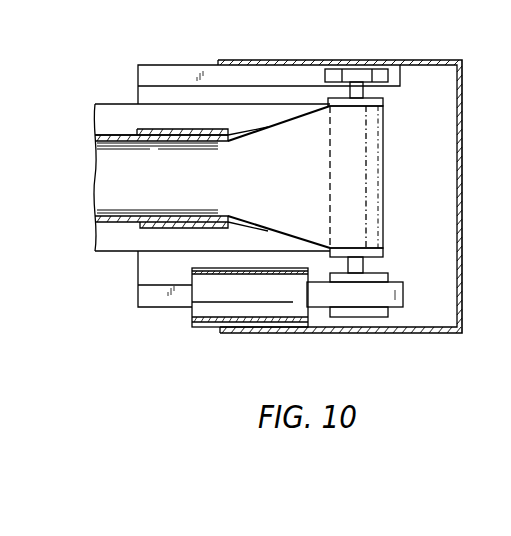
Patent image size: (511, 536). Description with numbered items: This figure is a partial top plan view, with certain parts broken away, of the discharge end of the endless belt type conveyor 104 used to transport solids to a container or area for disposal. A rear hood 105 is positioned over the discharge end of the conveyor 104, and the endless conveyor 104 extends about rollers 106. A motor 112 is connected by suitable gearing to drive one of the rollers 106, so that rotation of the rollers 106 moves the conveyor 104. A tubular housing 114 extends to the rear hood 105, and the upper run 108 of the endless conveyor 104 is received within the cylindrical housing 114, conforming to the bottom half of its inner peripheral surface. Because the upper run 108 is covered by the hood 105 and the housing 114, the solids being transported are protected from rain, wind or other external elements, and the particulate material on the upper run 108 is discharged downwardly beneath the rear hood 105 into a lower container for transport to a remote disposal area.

The endless belt type conveyor 104 is at (107, 189).
The rear hood 105 is at (462, 100).
The rollers 106 is at (336, 98).
The upper run 108 is at (304, 178).
The motor 112 is at (201, 316).
The tubular housing 114 is at (100, 134).